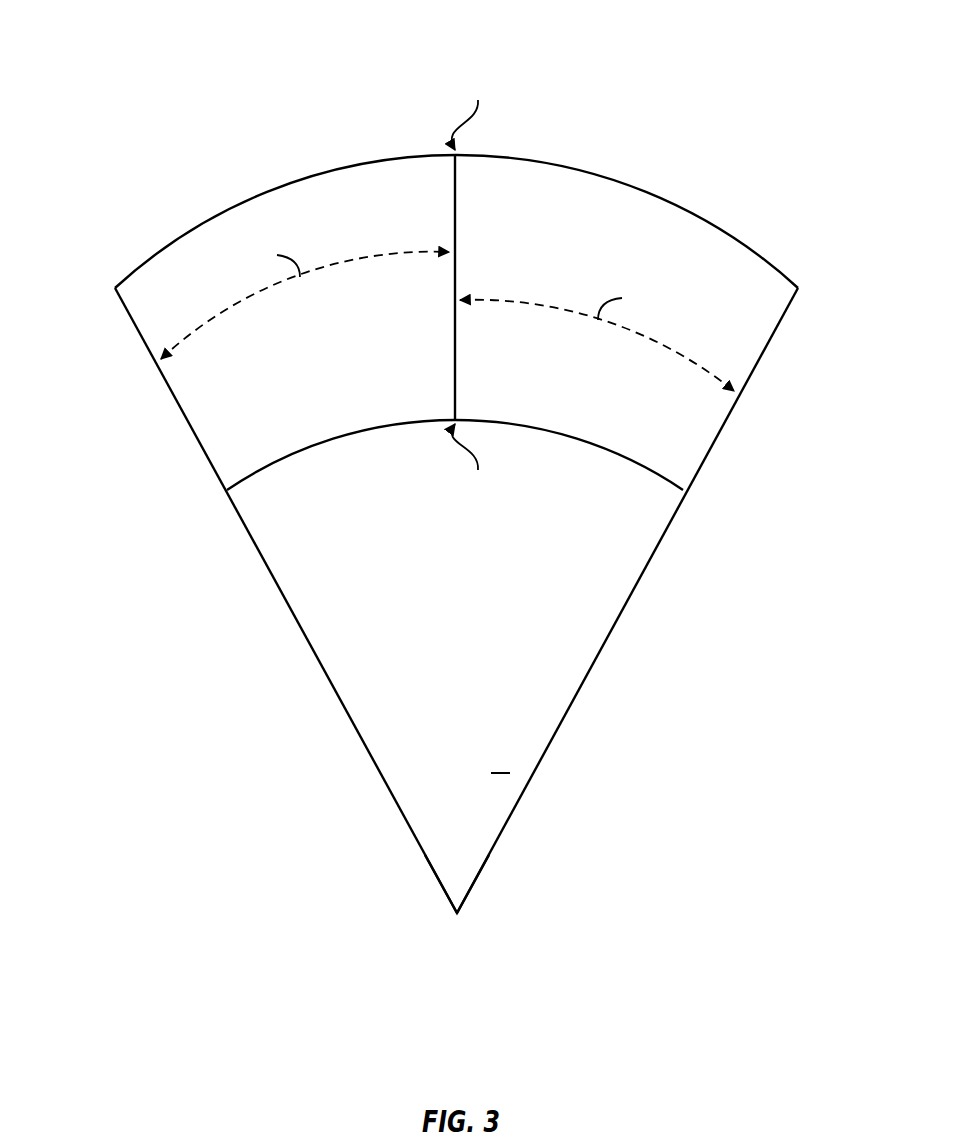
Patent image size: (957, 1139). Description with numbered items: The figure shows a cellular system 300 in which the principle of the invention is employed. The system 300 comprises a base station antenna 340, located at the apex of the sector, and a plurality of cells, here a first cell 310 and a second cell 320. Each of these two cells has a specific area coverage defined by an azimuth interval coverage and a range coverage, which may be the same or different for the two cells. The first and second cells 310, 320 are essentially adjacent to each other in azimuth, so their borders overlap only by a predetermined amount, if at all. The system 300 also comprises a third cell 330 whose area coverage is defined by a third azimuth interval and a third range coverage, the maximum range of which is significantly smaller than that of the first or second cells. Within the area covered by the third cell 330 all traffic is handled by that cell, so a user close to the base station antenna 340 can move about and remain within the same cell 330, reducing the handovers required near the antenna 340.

The system 300 is at (141, 50).
The first cell 310 is at (186, 264).
The second cell 320 is at (754, 289).
The third cell 330 is at (298, 559).
The base station antenna 340 is at (457, 918).